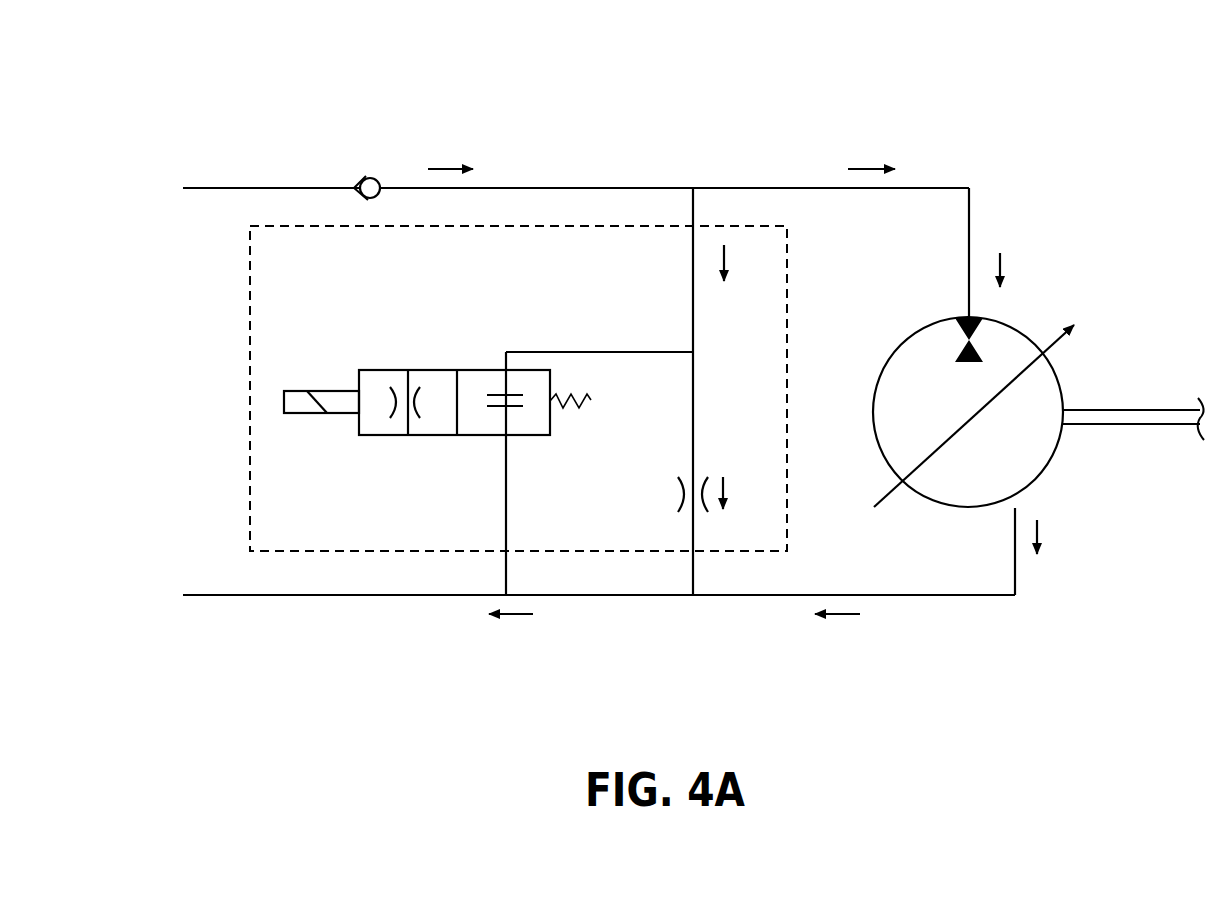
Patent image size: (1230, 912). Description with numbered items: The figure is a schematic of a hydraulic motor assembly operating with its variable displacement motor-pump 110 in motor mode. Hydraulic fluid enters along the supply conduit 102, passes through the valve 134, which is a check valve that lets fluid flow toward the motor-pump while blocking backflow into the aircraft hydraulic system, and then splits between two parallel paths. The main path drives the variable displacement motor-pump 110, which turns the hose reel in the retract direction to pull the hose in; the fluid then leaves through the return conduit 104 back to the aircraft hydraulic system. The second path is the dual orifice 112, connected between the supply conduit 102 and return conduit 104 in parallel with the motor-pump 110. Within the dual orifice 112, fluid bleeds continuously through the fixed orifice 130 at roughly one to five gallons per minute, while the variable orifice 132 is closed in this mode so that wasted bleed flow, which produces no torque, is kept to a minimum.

The supply conduit 102 is at (231, 188).
The return conduit 104 is at (277, 596).
The variable displacement motor-pump 110 is at (1063, 394).
The dual orifice 112 is at (510, 226).
The fixed orifice 130 is at (683, 496).
The variable orifice 132 is at (308, 414).
The valve 134 is at (363, 176).